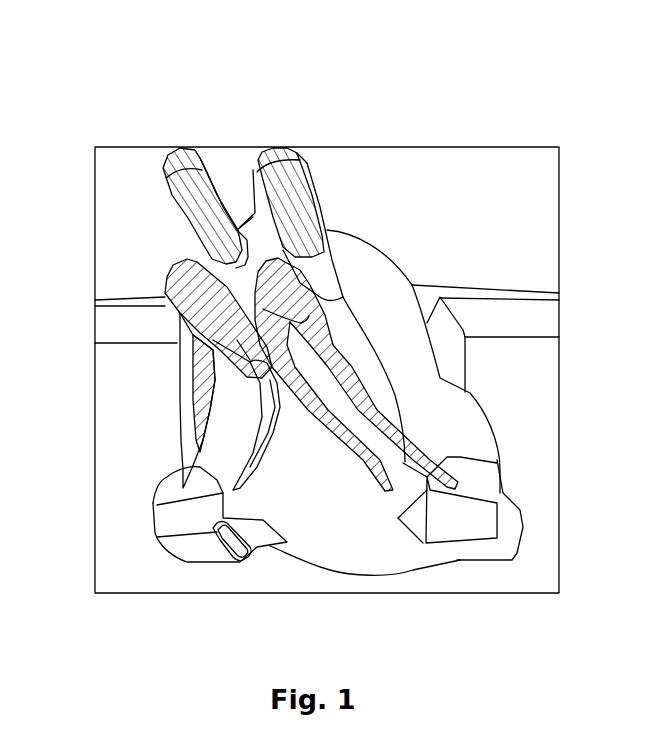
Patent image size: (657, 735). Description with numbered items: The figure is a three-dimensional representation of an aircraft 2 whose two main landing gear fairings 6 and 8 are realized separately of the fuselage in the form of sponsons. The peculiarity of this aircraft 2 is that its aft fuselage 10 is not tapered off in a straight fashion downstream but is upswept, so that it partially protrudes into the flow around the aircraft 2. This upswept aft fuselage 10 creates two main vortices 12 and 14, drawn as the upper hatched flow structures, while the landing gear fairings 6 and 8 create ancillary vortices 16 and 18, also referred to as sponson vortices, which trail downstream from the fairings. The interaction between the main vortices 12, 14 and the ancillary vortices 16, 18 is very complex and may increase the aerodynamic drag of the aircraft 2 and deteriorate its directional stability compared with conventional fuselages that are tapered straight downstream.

The aircraft 2 is at (402, 106).
The main landing gear fairing 6 is at (503, 522).
The main landing gear fairing 8 is at (190, 514).
The aft fuselage 10 is at (355, 257).
The main vortex 12 is at (195, 173).
The main vortex 14 is at (290, 180).
The ancillary vortex 16 is at (165, 297).
The ancillary vortex 18 is at (360, 395).